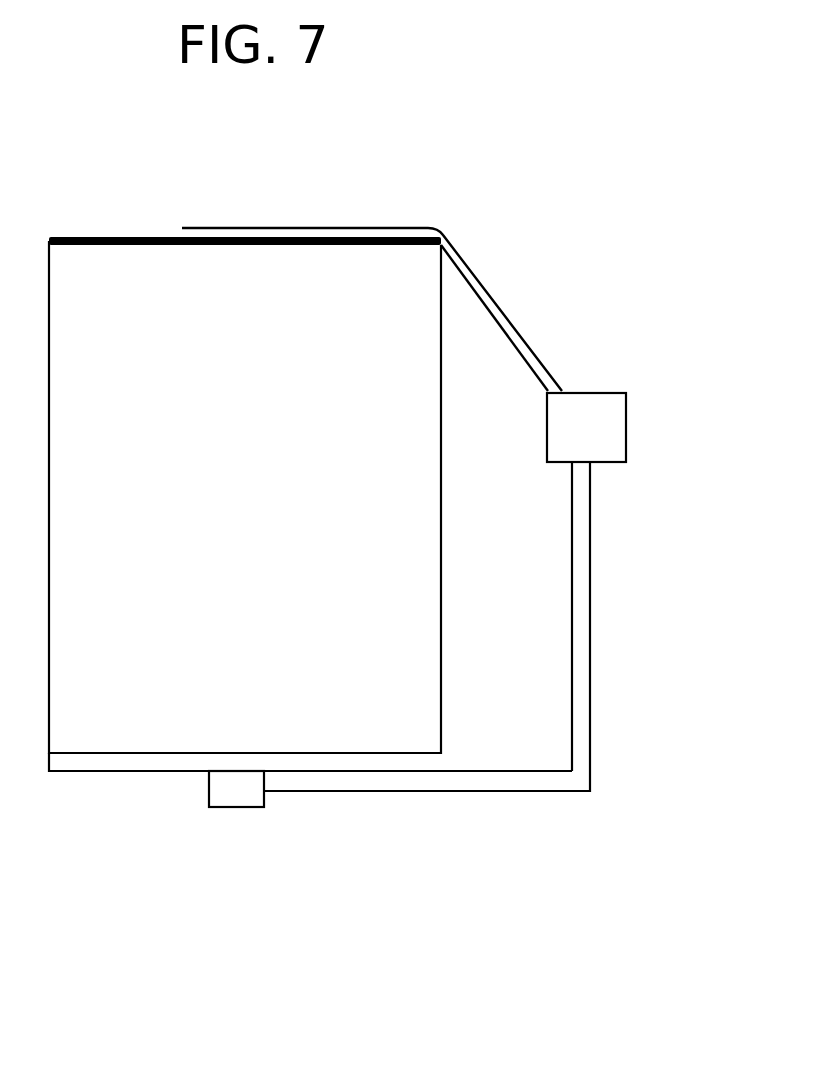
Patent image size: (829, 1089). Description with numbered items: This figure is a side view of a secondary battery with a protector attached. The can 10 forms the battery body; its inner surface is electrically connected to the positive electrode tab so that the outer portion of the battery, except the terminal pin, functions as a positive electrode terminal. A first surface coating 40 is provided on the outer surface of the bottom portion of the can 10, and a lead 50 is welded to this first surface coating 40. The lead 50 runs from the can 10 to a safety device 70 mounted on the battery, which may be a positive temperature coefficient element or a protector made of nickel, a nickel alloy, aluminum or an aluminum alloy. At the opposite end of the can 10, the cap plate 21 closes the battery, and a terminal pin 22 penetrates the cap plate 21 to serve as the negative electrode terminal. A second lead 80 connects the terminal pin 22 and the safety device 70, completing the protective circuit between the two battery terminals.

The can 10 is at (441, 446).
The first surface coating 40 is at (110, 237).
The lead 50 is at (508, 322).
The safety device 70 is at (626, 438).
The second lead 80 is at (590, 722).
The cap plate 21 is at (86, 771).
The terminal pin 22 is at (222, 807).